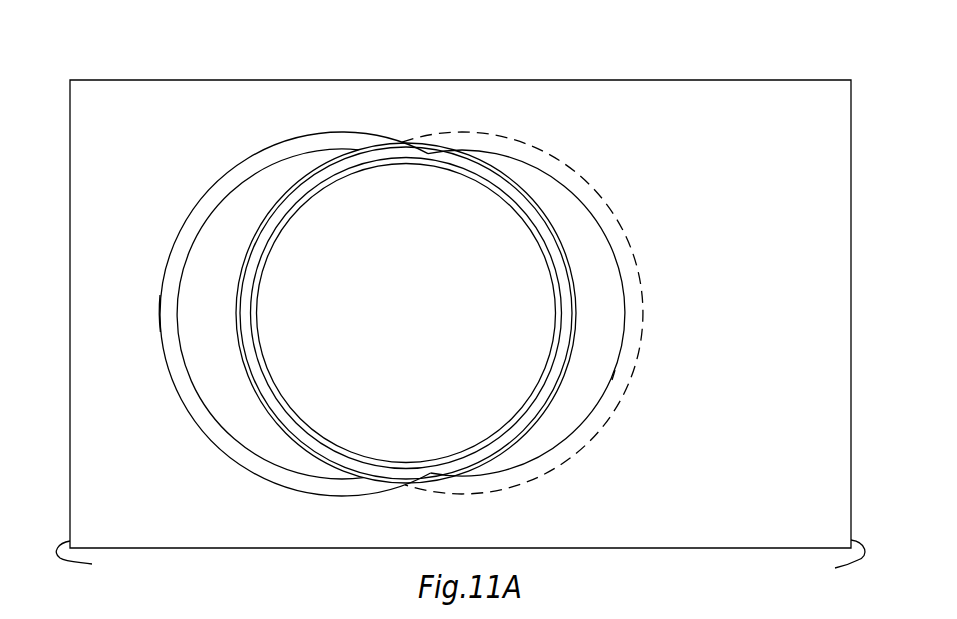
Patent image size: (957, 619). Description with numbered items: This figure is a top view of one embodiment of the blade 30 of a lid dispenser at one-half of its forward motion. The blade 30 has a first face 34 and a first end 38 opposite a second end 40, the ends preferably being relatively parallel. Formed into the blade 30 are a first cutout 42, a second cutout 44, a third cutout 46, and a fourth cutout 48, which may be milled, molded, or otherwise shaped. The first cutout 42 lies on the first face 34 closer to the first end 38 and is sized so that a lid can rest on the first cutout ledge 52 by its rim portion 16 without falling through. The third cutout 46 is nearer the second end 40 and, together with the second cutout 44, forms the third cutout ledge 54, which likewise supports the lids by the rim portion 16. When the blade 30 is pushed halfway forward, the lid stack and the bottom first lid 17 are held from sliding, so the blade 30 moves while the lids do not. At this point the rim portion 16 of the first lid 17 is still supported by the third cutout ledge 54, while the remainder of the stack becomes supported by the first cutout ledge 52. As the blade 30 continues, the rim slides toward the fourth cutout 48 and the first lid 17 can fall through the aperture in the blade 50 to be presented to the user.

The blade 30 is at (692, 45).
The first face 34 is at (729, 398).
The first end 38 is at (839, 561).
The second end 40 is at (86, 560).
The first cutout 42 is at (612, 378).
The second cutout 44 is at (290, 140).
The third cutout 46 is at (178, 353).
The fourth cutout 48 is at (571, 168).
The aperture in the blade 50 is at (215, 323).
The first cutout ledge 52 is at (603, 230).
The third cutout ledge 54 is at (161, 320).
The rim portion 16 is at (248, 255).
The first lid 17 is at (417, 318).